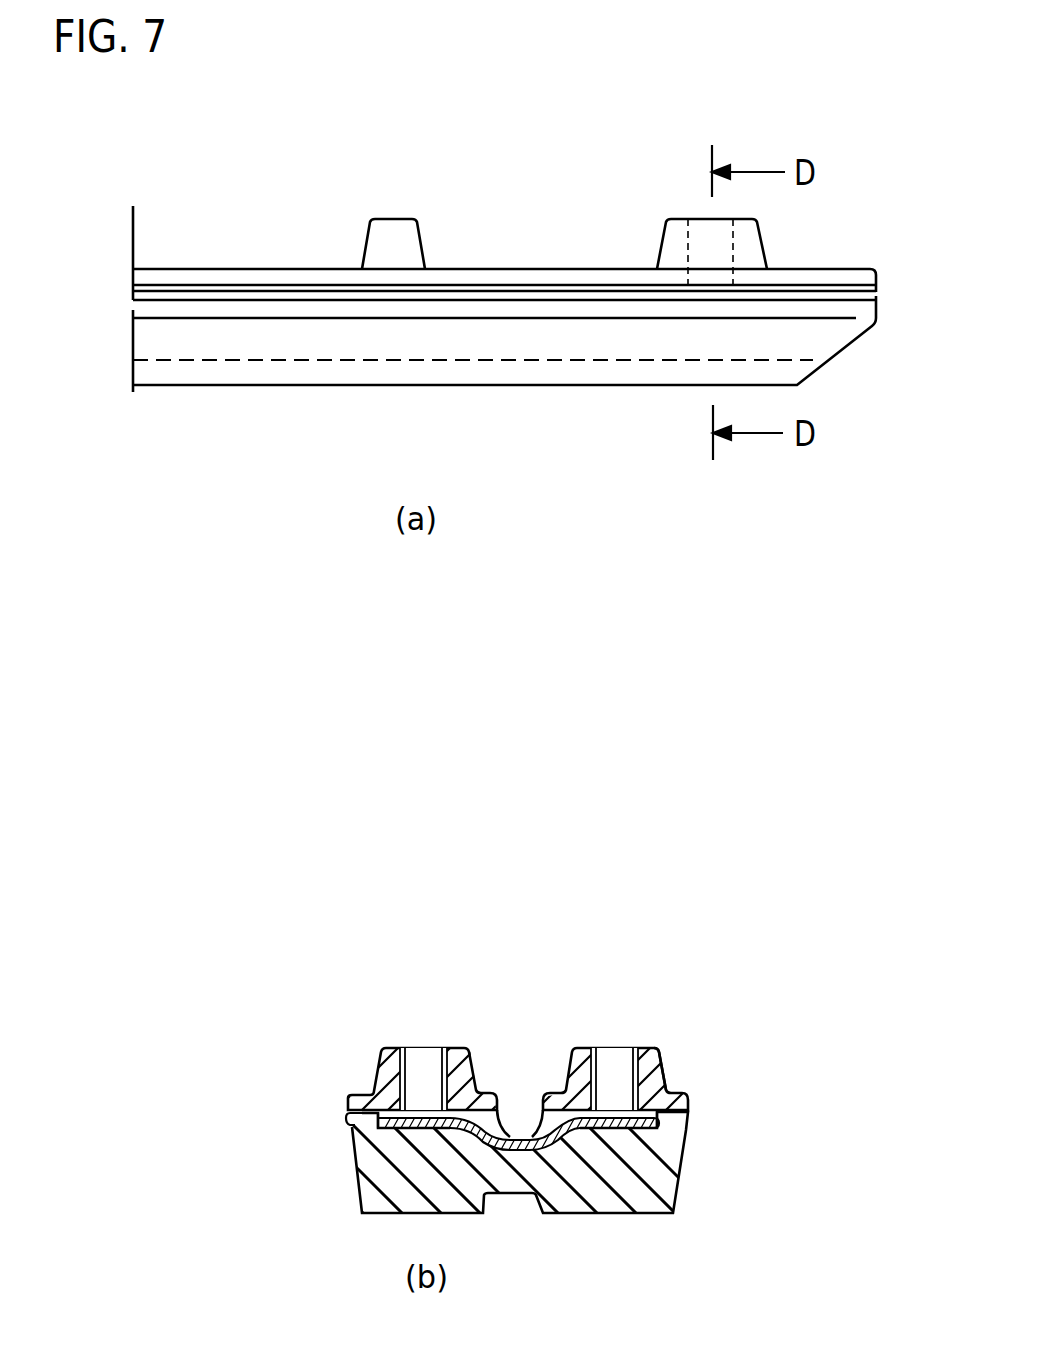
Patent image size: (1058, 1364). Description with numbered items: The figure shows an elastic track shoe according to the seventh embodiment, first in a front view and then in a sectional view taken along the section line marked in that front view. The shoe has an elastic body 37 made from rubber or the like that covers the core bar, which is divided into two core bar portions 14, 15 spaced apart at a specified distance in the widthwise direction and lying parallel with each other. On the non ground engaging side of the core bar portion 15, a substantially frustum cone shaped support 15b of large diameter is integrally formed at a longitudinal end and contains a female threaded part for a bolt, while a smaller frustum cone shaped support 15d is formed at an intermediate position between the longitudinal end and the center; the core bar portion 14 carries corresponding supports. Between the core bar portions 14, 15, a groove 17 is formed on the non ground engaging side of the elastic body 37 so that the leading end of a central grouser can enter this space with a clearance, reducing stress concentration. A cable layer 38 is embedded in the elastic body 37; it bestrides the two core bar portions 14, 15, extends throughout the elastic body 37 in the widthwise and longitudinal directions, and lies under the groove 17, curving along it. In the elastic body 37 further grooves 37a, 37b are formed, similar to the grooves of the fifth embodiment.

The core bar portion 14 is at (665, 1082).
The core bar portion 15 is at (827, 273).
The support (boss) 15b is at (675, 226).
The support (boss) 15d is at (404, 226).
The groove 17 is at (513, 1122).
The elastic body 37 is at (621, 378).
The groove 37a is at (853, 298).
The groove 37b is at (690, 1116).
The cable layer 38 is at (837, 285).